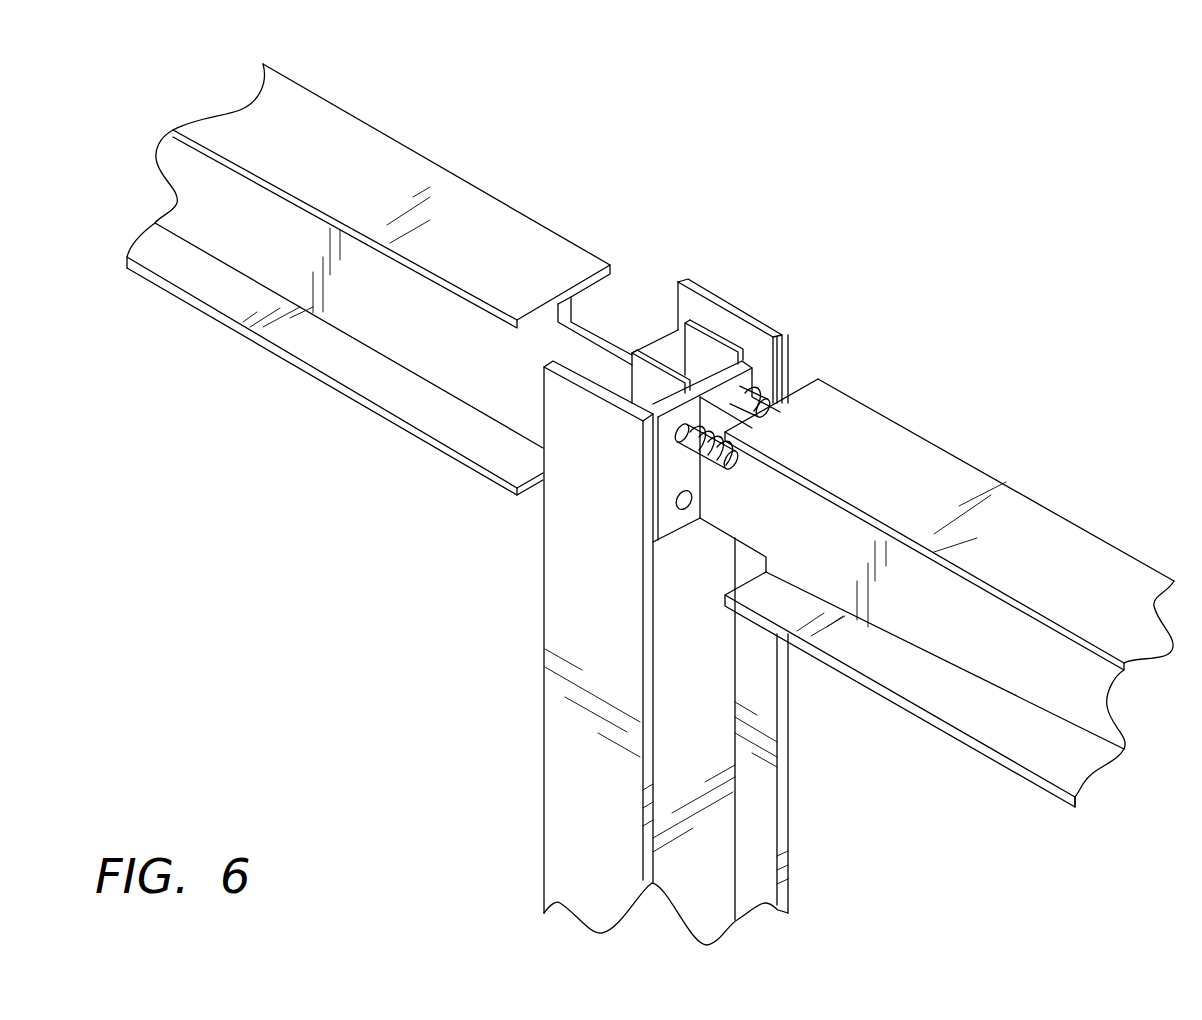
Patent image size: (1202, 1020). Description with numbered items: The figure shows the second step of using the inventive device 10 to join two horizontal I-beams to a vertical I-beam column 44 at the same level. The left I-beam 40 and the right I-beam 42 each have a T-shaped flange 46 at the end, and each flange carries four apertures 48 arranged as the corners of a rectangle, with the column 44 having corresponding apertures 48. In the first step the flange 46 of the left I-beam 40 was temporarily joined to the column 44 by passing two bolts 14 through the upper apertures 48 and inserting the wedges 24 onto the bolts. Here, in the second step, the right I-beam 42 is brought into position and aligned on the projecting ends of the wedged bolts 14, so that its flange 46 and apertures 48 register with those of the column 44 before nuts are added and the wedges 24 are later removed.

The inventive device 10 is at (689, 413).
The bolt 14 is at (738, 465).
The wedge 24 is at (657, 385).
The left I-beam 40 is at (278, 396).
The right I-beam 42 is at (936, 402).
The column 44 is at (517, 807).
The T-shaped flange 46 is at (677, 468).
The apertures 48 is at (677, 502).